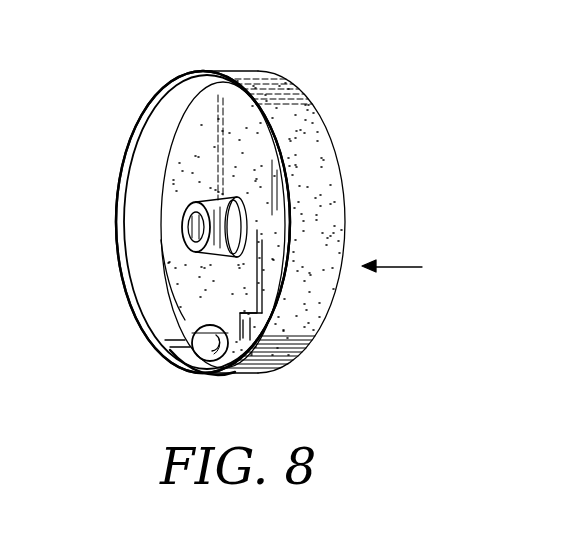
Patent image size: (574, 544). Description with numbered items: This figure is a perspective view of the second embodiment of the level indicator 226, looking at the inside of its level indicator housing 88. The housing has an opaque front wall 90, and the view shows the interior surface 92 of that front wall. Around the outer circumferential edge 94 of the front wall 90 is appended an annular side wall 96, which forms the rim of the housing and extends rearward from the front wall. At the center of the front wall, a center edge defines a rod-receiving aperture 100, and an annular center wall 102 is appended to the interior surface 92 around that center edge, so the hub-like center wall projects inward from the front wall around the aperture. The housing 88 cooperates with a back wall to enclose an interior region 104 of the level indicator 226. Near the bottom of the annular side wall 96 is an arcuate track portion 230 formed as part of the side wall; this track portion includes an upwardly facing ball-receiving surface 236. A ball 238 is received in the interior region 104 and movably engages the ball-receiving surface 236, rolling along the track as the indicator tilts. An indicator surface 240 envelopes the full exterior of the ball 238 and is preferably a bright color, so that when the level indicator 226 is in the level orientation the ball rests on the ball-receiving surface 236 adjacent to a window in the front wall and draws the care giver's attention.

The level indicator housing 88 is at (239, 222).
The front wall 90 is at (185, 142).
The interior surface 92 is at (178, 183).
The circumferential edge 94 is at (267, 72).
The annular side wall 96 is at (297, 112).
The rod-receiving aperture 100 is at (183, 236).
The annular center wall 102 is at (223, 217).
The interior region 104 is at (207, 140).
The level indicator 226 is at (415, 272).
The arcuate track portion 230 is at (197, 372).
The ball-receiving surface 236 is at (147, 305).
The ball 238 is at (190, 333).
The indicator surface 240 is at (210, 325).